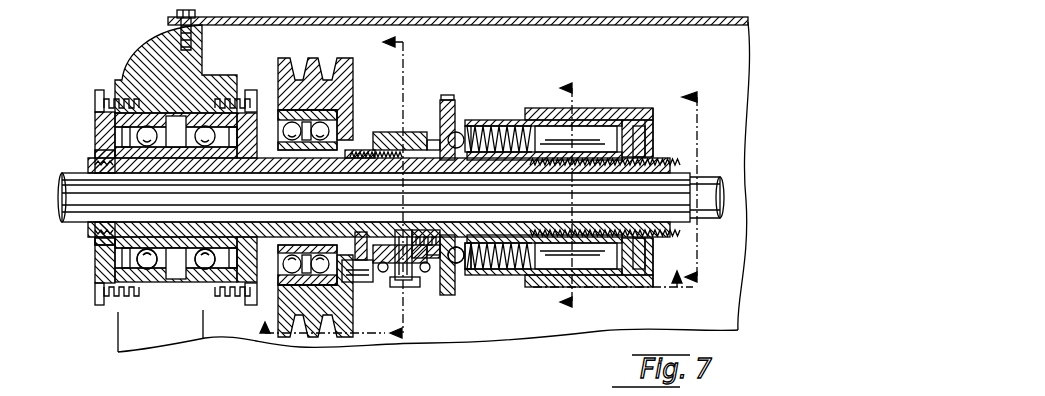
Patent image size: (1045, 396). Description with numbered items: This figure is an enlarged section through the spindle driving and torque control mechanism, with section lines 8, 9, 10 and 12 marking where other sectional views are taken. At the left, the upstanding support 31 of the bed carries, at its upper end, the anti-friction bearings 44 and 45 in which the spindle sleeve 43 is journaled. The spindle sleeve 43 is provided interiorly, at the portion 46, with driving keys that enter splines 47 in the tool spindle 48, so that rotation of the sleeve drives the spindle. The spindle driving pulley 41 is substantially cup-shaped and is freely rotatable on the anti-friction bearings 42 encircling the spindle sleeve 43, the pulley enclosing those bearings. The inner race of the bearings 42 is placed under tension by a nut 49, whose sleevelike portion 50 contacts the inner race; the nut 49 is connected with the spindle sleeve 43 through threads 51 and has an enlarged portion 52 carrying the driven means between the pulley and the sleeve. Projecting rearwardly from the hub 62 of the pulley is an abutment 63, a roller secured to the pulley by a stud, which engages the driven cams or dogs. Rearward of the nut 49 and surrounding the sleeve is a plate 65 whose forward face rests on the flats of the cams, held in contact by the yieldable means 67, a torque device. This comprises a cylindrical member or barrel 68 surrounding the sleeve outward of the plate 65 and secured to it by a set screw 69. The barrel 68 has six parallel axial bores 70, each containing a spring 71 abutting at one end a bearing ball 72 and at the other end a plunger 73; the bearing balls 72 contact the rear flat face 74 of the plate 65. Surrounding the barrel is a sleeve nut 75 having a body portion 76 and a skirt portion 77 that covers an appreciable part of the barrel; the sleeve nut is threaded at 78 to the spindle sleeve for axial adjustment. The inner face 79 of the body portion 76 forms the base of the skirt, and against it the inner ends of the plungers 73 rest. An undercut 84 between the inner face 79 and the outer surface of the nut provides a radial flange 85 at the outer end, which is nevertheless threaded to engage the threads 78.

The section line 8— 8 is at (476, 302).
The section line 9— 9 is at (573, 197).
The section line 10— 10 is at (696, 186).
The section line 12— 12 is at (405, 188).
The upstanding support 31 is at (118, 342).
The spindle driving pulley 41 is at (335, 96).
The anti-friction bearings 42 is at (270, 110).
The spindle sleeve 43 is at (95, 233).
The anti-friction bearing 44 is at (150, 300).
The anti-friction bearing 45 is at (167, 300).
The keyed portion of spindle sleeve 46 is at (90, 167).
The splines 47 is at (64, 208).
The tool spindle 48 is at (60, 186).
The nut 49 is at (410, 132).
The sleevelike portion 50 is at (360, 135).
The threads 51 is at (406, 135).
The enlarged portion 52 is at (442, 135).
The hub 62 is at (346, 125).
The abutment 63 is at (360, 286).
The plate 65 is at (443, 98).
The yieldable means 67 is at (648, 72).
The cylindrical member or barrel 68 is at (452, 124).
The set screw 69 is at (350, 297).
The bores 70 is at (608, 280).
The spring 71 is at (506, 276).
The bearing ball 72 is at (468, 270).
The plunger 73 is at (553, 280).
The rear flat face 74 is at (482, 126).
The sleeve nut 75 is at (598, 108).
The body portion 76 is at (650, 240).
The skirt portion 77 is at (550, 110).
The threads 78 is at (645, 140).
The inner face 79 is at (650, 124).
The undercut 84 is at (648, 254).
The radial flange 85 is at (655, 158).